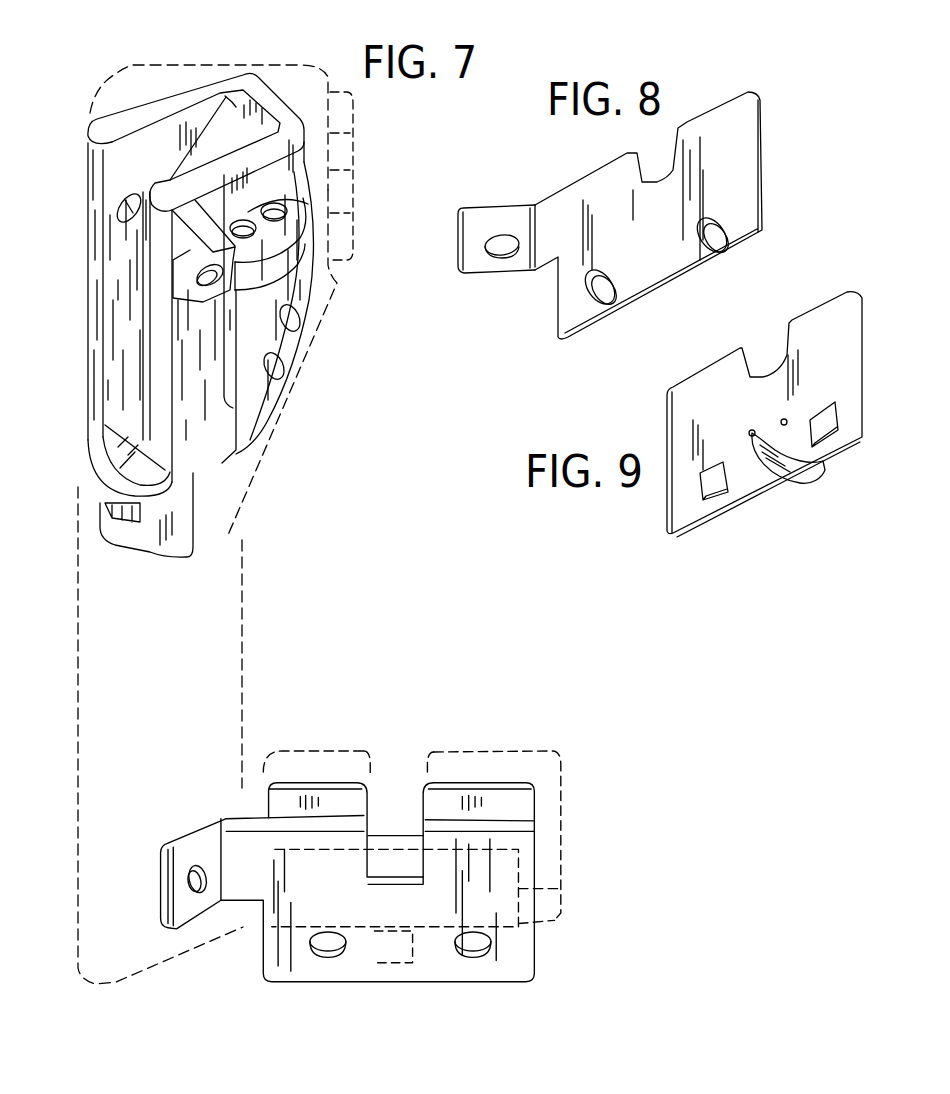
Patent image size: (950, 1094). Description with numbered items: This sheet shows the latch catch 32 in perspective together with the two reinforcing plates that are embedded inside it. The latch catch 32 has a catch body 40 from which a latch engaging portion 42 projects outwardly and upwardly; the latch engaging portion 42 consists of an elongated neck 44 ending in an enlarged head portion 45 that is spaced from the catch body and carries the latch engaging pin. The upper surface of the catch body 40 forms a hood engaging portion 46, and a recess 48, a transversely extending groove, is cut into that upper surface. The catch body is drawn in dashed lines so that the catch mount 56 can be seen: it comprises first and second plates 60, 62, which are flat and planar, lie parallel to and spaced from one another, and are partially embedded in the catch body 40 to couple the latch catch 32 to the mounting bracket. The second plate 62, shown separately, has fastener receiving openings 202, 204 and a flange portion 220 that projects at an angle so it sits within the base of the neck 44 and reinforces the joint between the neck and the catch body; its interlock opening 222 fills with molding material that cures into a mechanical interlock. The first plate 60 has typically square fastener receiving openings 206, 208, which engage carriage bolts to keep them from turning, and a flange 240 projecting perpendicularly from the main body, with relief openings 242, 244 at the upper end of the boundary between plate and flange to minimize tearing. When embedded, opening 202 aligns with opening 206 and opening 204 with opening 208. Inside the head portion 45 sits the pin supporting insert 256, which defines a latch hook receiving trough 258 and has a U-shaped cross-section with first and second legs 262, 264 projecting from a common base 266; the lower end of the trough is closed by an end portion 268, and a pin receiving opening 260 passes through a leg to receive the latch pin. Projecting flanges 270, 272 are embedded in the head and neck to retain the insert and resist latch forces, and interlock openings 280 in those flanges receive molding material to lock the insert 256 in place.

In FIG. 7, the latch catch 32 is at (250, 544).
In FIG. 7, the catch body 40 is at (533, 873).
In FIG. 7, the latch engaging portion 42 is at (240, 620).
In FIG. 7, the elongated neck 44 is at (245, 688).
In FIG. 7, the head portion 45 is at (230, 62).
In FIG. 7, the hood engaging portion 46 is at (468, 747).
In FIG. 7, the recess 48 is at (403, 770).
In FIG. 7, the catch mount 56 is at (589, 993).
In FIG. 7, the first plate 60 is at (497, 790).
In FIG. 9, the first plate 60 is at (700, 520).
In FIG. 7, the second plate 62 is at (450, 957).
In FIG. 8, the second plate 62 is at (747, 183).
In FIG. 8, the fastener receiving opening 202 is at (612, 297).
In FIG. 8, the fastener receiving opening 204 is at (730, 240).
In FIG. 9, the fastener receiving opening 206 is at (725, 494).
In FIG. 9, the fastener receiving opening 208 is at (832, 436).
In FIG. 7, the flange portion 220 is at (180, 898).
In FIG. 8, the flange portion 220 is at (495, 267).
In FIG. 7, the interlock opening 222 is at (202, 843).
In FIG. 8, the interlock opening 222 is at (507, 233).
In FIG. 9, the flange 240 is at (803, 462).
In FIG. 9, the relief opening 242 is at (752, 432).
In FIG. 9, the relief opening 244 is at (787, 422).
In FIG. 7, the insert 256 is at (117, 257).
In FIG. 7, the latch hook receiving trough 258 is at (137, 172).
In FIG. 7, the pin receiving opening 260 is at (115, 218).
In FIG. 7, the first leg 262 is at (157, 133).
In FIG. 7, the second leg 264 is at (222, 173).
In FIG. 7, the common base 266 is at (277, 103).
In FIG. 7, the end portion 268 is at (83, 447).
In FIG. 7, the projecting flange 270 is at (157, 560).
In FIG. 7, the projecting flange 272 is at (263, 437).
In FIG. 7, the interlock opening 280 is at (244, 227).